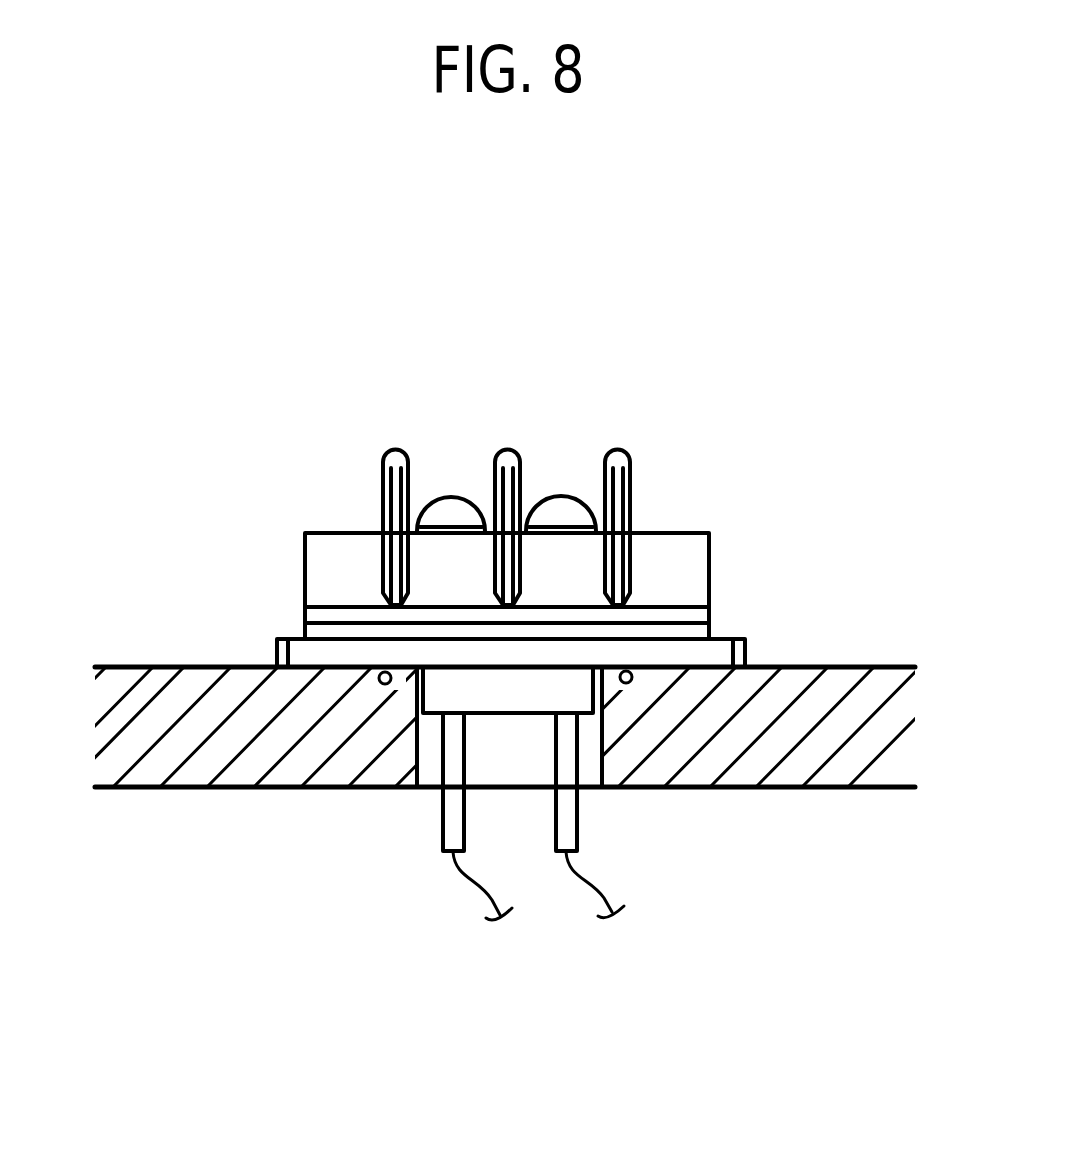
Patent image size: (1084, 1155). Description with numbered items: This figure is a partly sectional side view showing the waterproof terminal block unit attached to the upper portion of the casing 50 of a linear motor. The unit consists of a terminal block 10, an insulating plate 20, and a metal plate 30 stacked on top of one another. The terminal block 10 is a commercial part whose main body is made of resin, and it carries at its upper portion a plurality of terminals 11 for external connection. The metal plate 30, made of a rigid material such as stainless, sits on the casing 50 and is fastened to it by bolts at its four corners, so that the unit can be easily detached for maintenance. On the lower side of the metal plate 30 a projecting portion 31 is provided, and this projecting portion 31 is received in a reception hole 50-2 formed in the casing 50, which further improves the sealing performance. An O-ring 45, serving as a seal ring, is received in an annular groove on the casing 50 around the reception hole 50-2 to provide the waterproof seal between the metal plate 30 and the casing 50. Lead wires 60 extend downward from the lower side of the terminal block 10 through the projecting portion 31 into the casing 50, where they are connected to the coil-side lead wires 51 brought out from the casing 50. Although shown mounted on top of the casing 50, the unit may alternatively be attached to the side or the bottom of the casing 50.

The terminal block 10 is at (726, 543).
The terminals 11 is at (451, 496).
The insulating plate 20 is at (291, 632).
The metal plate 30 is at (764, 642).
The projecting portion 31 is at (510, 702).
The O-ring 45 is at (641, 678).
The casing 50 is at (187, 804).
The reception hole 50-2 is at (416, 759).
The coil-side lead wires 51 is at (478, 886).
The lead wires 60 is at (578, 820).